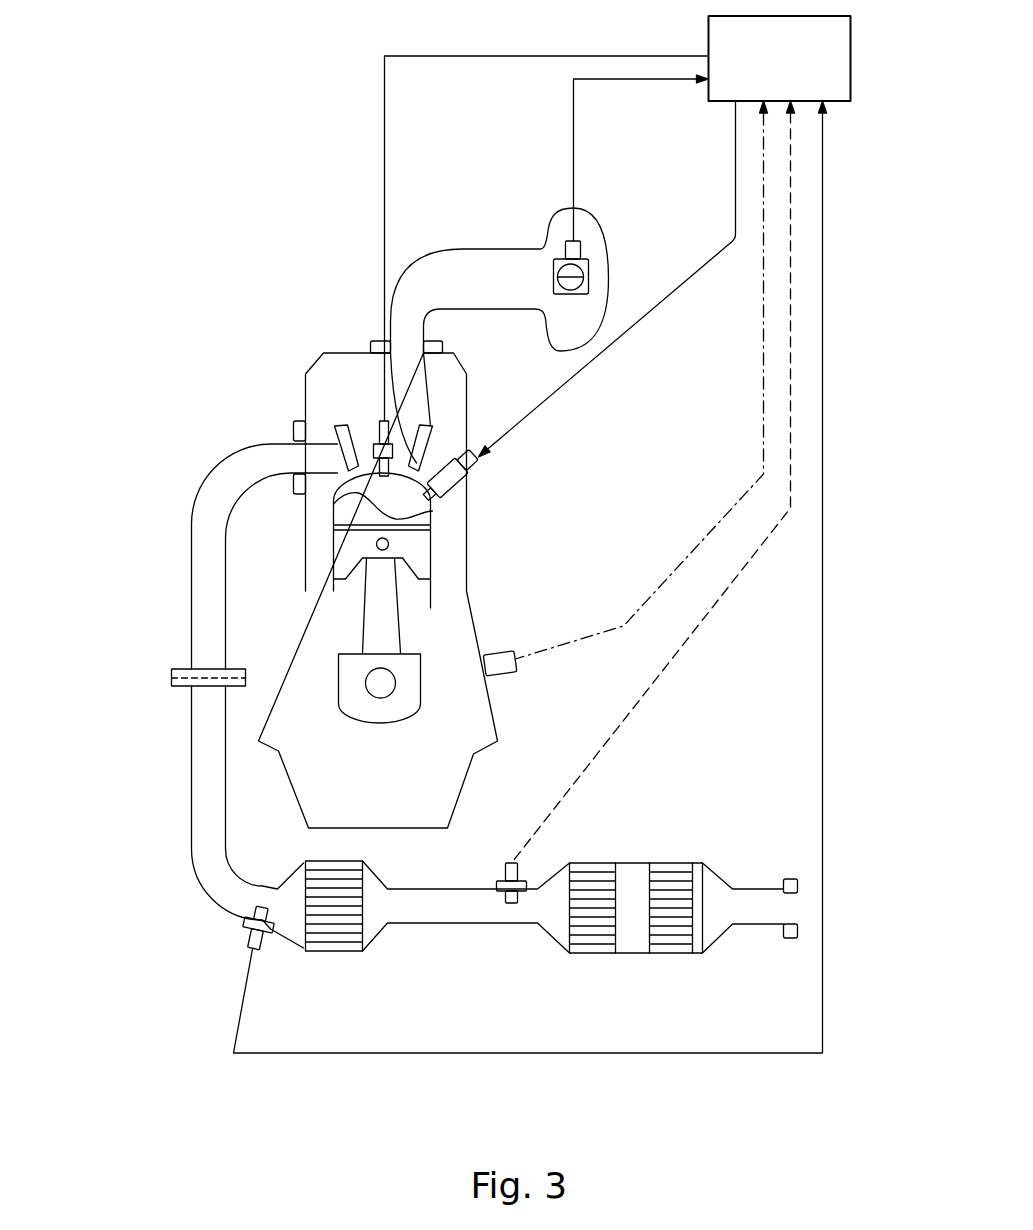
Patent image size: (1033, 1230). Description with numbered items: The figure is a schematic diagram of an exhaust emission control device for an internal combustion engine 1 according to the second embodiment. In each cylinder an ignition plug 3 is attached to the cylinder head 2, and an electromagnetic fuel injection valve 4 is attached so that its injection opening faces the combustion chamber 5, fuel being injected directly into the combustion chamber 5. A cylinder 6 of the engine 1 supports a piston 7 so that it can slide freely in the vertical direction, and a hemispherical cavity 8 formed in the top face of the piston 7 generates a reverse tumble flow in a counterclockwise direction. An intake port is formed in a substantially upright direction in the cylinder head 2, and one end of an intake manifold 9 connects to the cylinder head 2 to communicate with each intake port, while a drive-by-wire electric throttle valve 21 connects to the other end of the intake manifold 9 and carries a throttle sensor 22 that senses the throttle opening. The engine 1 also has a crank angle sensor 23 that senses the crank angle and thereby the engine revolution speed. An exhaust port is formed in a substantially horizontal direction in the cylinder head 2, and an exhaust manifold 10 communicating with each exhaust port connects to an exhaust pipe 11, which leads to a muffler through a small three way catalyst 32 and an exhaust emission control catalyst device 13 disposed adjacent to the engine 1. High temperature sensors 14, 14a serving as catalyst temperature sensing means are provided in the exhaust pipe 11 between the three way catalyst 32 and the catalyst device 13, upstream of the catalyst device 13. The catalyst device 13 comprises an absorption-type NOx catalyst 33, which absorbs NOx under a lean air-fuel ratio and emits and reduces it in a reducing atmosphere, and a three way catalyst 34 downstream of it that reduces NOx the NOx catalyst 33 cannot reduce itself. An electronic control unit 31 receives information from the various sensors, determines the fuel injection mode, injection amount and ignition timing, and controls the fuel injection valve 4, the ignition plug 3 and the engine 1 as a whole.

The engine 1 is at (270, 326).
The cylinder head 2 is at (305, 385).
The ignition plug 3 is at (374, 440).
The fuel injection valve 4 is at (470, 468).
The combustion chamber 5 is at (340, 497).
The cylinder 6 is at (333, 590).
The piston 7 is at (422, 550).
The cavity 8 is at (432, 510).
The intake manifold 9 is at (472, 248).
The exhaust manifold 10 is at (190, 557).
The exhaust pipe 11 is at (189, 797).
The exhaust emission control catalyst device 13 is at (639, 901).
The high temperature sensor 14 is at (495, 863).
The high temperature sensor 14a is at (242, 928).
The electric throttle valve 21 is at (588, 256).
The throttle sensor 22 is at (582, 252).
The crank angle sensor 23 is at (498, 652).
The electronic control unit 31 is at (850, 62).
The three way catalyst 32 is at (330, 952).
The absorption-type NOx catalyst 33 is at (592, 952).
The three way catalyst 34 is at (672, 952).